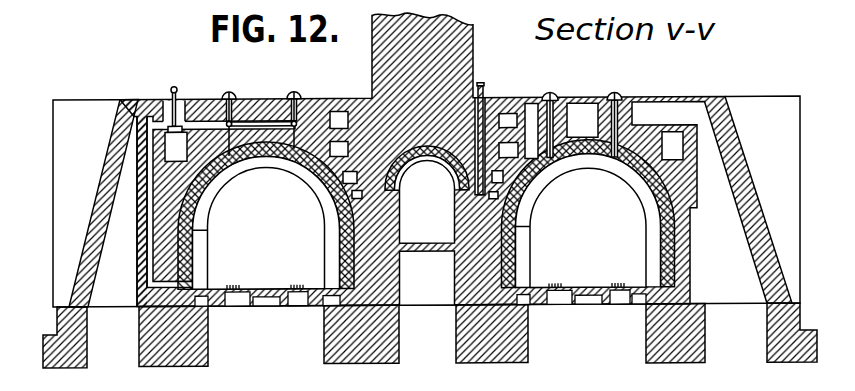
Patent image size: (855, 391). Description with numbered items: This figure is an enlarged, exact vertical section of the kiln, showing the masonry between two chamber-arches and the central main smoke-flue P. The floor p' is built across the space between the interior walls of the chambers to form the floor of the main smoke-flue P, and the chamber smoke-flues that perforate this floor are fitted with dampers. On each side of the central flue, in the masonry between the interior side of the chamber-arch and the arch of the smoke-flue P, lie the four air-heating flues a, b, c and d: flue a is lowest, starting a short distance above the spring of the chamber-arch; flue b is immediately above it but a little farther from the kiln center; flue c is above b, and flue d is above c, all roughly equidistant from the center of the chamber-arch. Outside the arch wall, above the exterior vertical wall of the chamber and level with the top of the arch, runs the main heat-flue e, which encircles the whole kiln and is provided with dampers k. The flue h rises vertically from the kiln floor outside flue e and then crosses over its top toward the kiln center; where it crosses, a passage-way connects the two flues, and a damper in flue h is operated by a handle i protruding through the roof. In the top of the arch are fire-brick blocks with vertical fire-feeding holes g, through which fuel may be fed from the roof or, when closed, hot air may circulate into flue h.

The heating flue a is at (337, 217).
The heating flue b is at (338, 192).
The heating flue c is at (336, 170).
The heating flue d is at (338, 113).
The main heat-flue e is at (424, 146).
The fire-feeding holes g is at (229, 92).
The flue h is at (265, 123).
The damper handle i is at (174, 88).
The dampers k is at (481, 84).
The main smoke-flue P is at (427, 201).
The floor p' is at (427, 278).